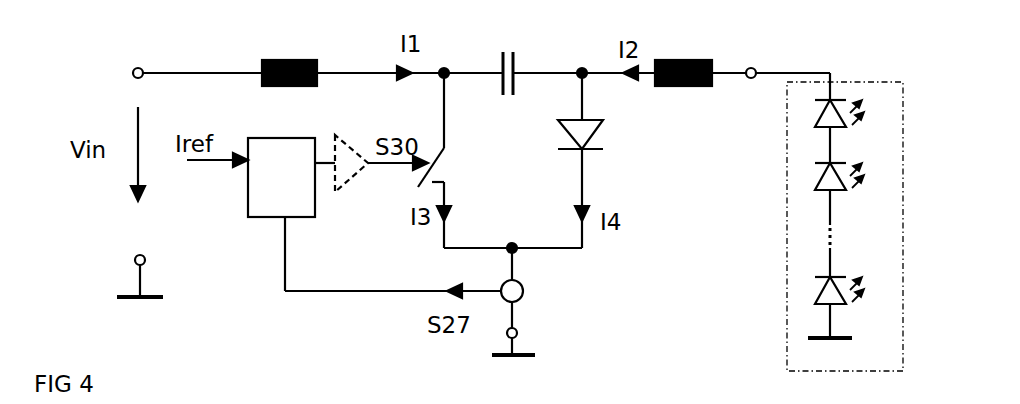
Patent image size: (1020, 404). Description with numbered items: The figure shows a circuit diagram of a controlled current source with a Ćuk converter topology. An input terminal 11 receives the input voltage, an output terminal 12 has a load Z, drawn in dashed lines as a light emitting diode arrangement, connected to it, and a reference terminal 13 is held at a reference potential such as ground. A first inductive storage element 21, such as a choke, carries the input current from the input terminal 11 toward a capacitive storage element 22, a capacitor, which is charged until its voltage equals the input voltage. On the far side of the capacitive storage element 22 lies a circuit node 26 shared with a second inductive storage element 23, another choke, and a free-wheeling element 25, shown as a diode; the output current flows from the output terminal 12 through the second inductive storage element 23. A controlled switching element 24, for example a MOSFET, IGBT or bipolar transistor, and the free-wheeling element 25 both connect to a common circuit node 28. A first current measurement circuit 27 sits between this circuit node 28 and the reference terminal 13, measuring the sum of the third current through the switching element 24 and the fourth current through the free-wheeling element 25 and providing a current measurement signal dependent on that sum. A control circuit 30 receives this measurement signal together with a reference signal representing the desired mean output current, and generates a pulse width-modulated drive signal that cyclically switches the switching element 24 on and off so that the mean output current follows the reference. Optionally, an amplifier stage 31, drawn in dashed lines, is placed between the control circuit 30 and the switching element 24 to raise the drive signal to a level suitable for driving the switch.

The input terminal 11 is at (138, 66).
The output terminal 12 is at (749, 66).
The reference terminal 13 is at (519, 332).
The first inductive storage element 21 is at (291, 58).
The capacitive storage element 22 is at (503, 50).
The second inductive storage element 23 is at (688, 59).
The controlled switching element 24 is at (450, 168).
The free-wheeling element 25 is at (596, 138).
The circuit node 26 is at (579, 66).
The first current measurement circuit 27 is at (523, 290).
The circuit node 28 is at (511, 241).
The control circuit 30 is at (262, 219).
The amplifier stage 31 is at (346, 142).
The load Z is at (875, 82).